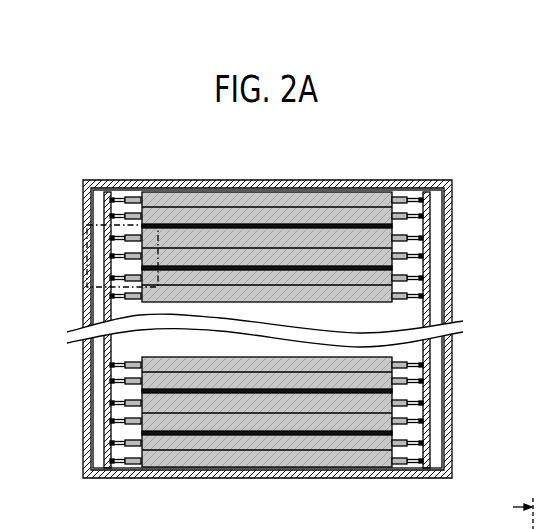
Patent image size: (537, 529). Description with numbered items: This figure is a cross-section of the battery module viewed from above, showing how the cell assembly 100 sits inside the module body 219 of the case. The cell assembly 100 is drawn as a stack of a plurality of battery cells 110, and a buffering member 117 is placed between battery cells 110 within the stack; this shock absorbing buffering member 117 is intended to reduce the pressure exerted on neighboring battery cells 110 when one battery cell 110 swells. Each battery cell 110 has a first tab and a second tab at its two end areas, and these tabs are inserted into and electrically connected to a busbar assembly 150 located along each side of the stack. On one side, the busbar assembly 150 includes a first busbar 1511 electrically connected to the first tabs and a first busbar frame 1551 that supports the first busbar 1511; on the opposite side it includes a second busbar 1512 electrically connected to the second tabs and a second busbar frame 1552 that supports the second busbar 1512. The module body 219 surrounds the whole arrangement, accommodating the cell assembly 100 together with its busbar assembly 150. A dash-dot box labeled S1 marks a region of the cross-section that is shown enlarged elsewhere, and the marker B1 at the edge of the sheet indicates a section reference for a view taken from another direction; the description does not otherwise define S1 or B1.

The cell assembly 100 is at (268, 300).
The battery cell 110 is at (267, 301).
The buffering member 117 is at (347, 223).
The busbar assembly 150 is at (268, 295).
The module body 219 is at (454, 237).
The first busbar 1511 is at (104, 282).
The second busbar 1512 is at (424, 283).
The first busbar frame 1551 is at (106, 298).
The second busbar frame 1552 is at (430, 305).
The region S1 is at (87, 240).
The section line B1 is at (510, 513).